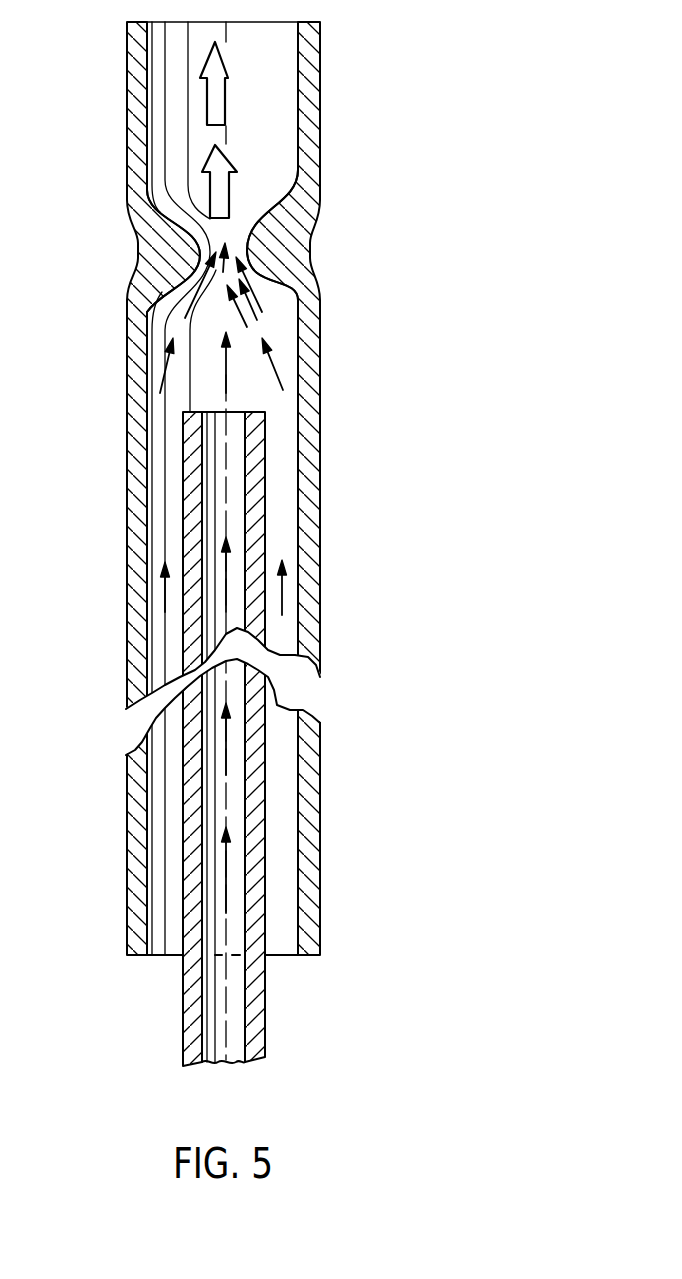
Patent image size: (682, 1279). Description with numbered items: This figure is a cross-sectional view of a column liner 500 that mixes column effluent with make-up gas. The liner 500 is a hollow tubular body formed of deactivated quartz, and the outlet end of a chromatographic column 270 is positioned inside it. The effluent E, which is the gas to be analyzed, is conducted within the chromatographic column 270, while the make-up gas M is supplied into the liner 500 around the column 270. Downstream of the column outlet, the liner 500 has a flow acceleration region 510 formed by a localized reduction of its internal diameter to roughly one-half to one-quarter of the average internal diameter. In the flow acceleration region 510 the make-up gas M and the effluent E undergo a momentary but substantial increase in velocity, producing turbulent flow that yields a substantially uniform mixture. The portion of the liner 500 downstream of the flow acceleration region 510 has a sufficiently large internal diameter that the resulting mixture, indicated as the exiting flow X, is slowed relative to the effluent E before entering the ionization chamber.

The liner 500 is at (388, 398).
The flow acceleration region 510 is at (176, 250).
The chromatographic column 270 is at (266, 1014).
The mixed gas flow X is at (232, 195).
The make-up gas M is at (282, 614).
The effluent E is at (227, 888).